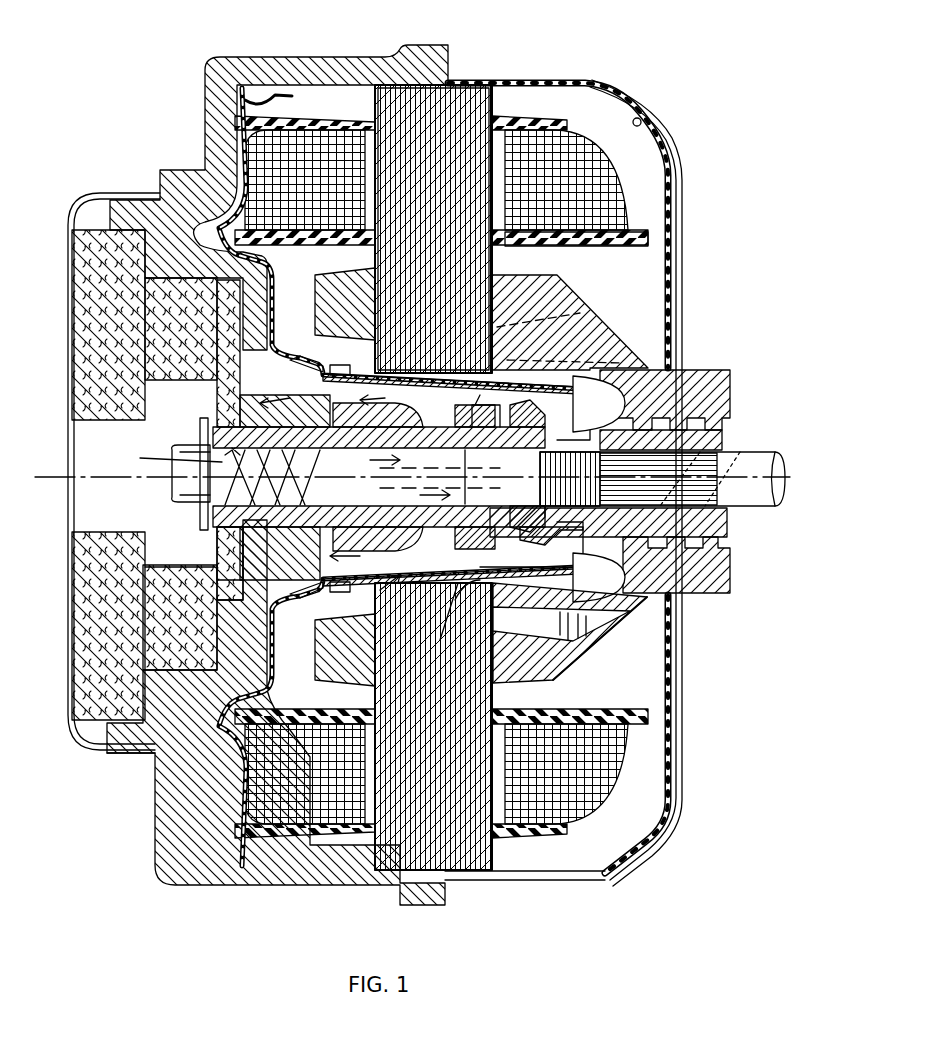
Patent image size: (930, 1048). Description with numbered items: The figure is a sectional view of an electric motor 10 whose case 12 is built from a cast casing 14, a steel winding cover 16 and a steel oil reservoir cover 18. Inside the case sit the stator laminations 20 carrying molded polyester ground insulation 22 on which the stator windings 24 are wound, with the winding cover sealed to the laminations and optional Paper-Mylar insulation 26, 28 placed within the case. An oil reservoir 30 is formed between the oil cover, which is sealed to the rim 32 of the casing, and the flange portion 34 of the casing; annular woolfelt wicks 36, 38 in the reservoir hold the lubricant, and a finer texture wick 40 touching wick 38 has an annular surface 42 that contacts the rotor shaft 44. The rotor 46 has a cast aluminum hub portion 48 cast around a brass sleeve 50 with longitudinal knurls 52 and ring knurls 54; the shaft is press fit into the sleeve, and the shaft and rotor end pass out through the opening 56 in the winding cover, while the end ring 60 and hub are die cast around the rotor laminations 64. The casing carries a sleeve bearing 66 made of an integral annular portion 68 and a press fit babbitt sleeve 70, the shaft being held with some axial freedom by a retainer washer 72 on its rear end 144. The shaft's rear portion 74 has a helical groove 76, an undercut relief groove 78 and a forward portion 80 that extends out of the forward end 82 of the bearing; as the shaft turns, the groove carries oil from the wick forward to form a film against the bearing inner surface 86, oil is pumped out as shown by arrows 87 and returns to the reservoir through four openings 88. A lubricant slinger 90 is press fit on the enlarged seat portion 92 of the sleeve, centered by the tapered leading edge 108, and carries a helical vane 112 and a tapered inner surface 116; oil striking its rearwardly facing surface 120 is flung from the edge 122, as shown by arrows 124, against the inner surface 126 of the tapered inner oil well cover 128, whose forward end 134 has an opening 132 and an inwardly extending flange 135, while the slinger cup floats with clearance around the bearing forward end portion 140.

The motor 10 is at (374, 43).
The case 12 is at (585, 72).
The casing 14 is at (270, 58).
The winding cover 16 is at (607, 86).
The oil reservoir cover 18 is at (90, 195).
The stator laminations 20 is at (462, 105).
The ground insulation 22 is at (640, 234).
The stator windings 24 is at (603, 165).
The Paper-Mylar insulation 26 is at (638, 116).
The Paper-Mylar insulation 28 is at (280, 96).
The oil reservoir 30 is at (130, 503).
The rim 32 is at (140, 755).
The flange portion 34 is at (252, 602).
The woolfelt wick 36 is at (80, 573).
The woolfelt wick 38 is at (150, 340).
The finer texture wick 40 is at (225, 320).
The annular surface 42 is at (212, 445).
The rotor shaft 44 is at (760, 446).
The rotor 46 is at (713, 367).
The hub portion 48 is at (725, 568).
The brass sleeve 50 is at (718, 516).
The longitudinal knurls 52 is at (715, 462).
The ring knurls 54 is at (658, 478).
The opening 56 is at (328, 298).
The end ring 60 is at (512, 330).
The rotor laminations 64 is at (433, 229).
The sleeve bearing 66 is at (400, 600).
The annular portion 68 is at (295, 332).
The babbitt sleeve 70 is at (218, 537).
The retainer washer 72 is at (203, 428).
The rear portion 74 is at (282, 440).
The helical groove 76 is at (167, 461).
The undercut relief groove 78 is at (379, 477).
The forward portion 80 is at (478, 605).
The forward end 82 is at (468, 477).
The inner surface 86 is at (325, 455).
The arrows 87 is at (290, 395).
The openings 88 is at (240, 575).
The lubricant slinger 90 is at (510, 403).
The seat portion 92 is at (538, 527).
The tapered leading edge 108 is at (518, 448).
The helical vane 112 is at (450, 596).
The tapered inner surface 116 is at (478, 400).
The rearwardly facing surface 120 is at (512, 594).
The edge 122 is at (470, 390).
The arrows 124 is at (440, 485).
The inner surface 126 is at (348, 390).
The inner oil well cover 128 is at (557, 398).
The opening 132 is at (621, 403).
The forward end 134 is at (600, 612).
The inwardly extending flange 135 is at (612, 555).
The forward end portion 140 is at (458, 611).
The rear end 144 is at (185, 500).